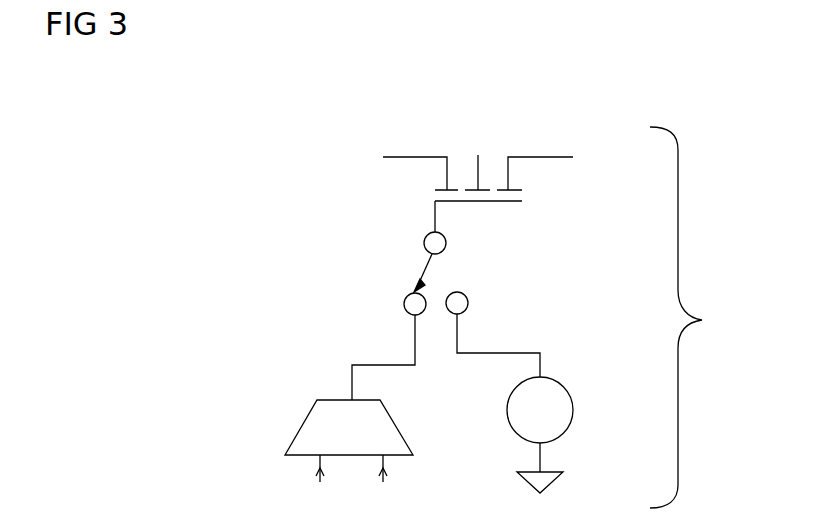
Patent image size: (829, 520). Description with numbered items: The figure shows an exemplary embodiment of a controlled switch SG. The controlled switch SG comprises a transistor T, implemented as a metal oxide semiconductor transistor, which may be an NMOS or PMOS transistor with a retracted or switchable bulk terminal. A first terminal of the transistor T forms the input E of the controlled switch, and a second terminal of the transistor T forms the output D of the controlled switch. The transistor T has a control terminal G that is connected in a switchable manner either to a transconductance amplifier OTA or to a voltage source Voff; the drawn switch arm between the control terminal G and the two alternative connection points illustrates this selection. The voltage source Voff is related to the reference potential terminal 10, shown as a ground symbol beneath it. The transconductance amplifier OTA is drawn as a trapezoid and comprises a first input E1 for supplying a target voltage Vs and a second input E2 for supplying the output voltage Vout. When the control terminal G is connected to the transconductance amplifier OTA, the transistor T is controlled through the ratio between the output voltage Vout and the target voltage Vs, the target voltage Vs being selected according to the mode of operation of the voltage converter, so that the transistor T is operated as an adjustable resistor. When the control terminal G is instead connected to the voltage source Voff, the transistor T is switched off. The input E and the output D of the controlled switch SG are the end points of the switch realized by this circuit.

The transistor T is at (477, 161).
The input E is at (419, 160).
The output D is at (535, 160).
The control terminal G is at (430, 216).
The transconductance amplifier OTA is at (303, 419).
The first input E1 is at (318, 459).
The second input E2 is at (386, 459).
The target voltage Vs is at (318, 478).
The output voltage Vout is at (386, 480).
The voltage source Voff is at (561, 410).
The reference potential terminal 10 is at (549, 484).
The controlled switch SG is at (694, 317).